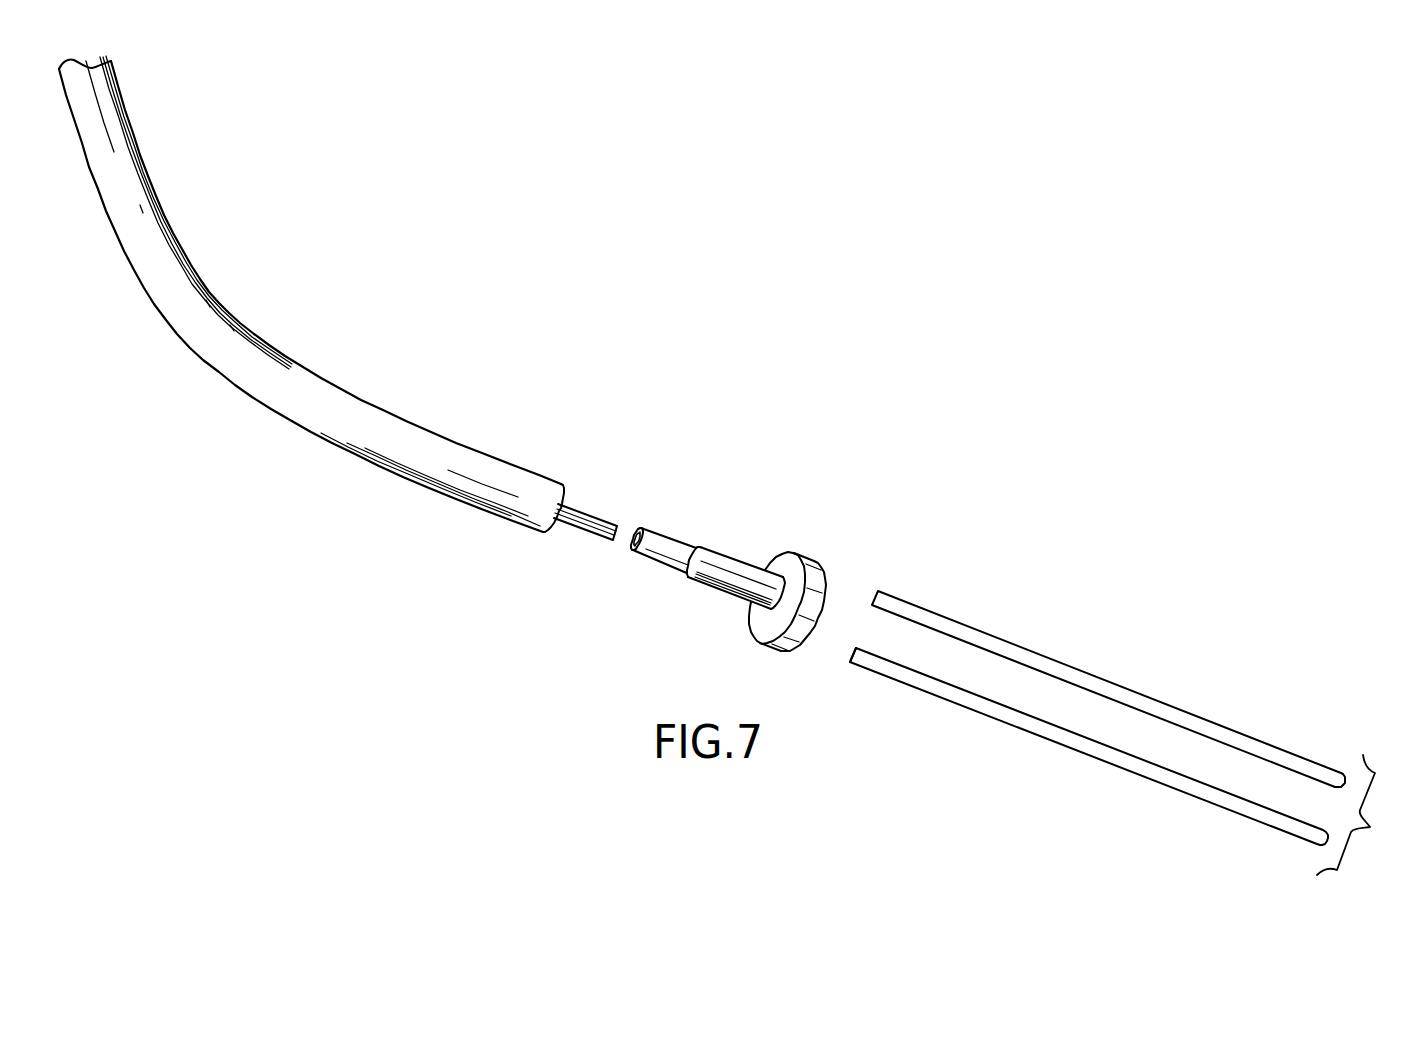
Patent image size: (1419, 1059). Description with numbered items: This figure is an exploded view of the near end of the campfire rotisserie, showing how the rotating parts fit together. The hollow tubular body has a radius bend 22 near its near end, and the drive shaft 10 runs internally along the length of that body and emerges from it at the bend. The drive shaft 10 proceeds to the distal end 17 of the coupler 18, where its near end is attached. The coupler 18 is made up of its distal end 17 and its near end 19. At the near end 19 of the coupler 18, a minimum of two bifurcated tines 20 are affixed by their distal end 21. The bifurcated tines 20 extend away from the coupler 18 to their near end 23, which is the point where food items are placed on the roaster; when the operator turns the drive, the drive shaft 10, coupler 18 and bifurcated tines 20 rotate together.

The radius bend 22 is at (274, 354).
The drive shaft 10 is at (587, 509).
The distal end of the coupler 17 is at (659, 531).
The coupler 18 is at (731, 597).
The near end of the coupler 19 is at (825, 578).
The bifurcated tines 20 is at (1112, 693).
The distal end of the bifurcated tines 21 is at (854, 650).
The near end of the bifurcated tines 23 is at (1361, 815).